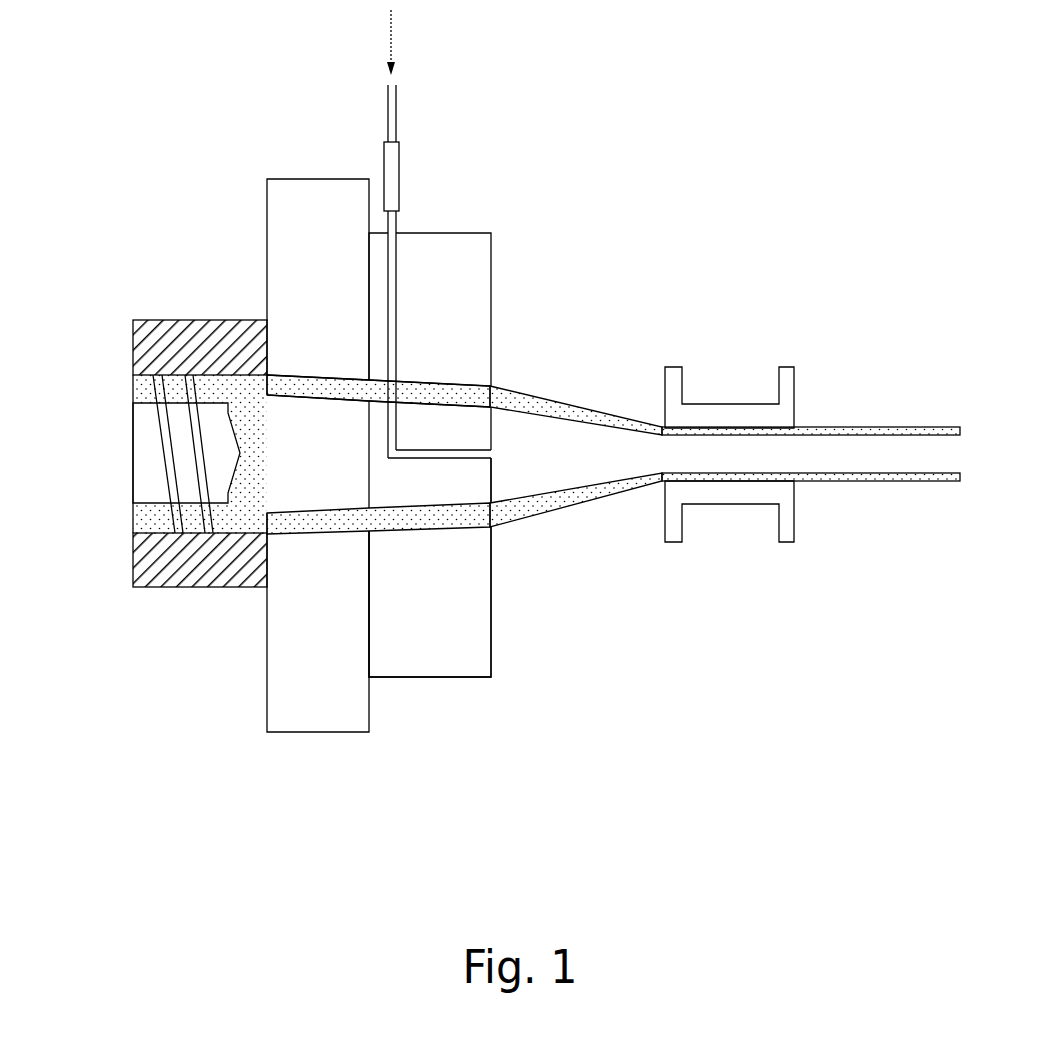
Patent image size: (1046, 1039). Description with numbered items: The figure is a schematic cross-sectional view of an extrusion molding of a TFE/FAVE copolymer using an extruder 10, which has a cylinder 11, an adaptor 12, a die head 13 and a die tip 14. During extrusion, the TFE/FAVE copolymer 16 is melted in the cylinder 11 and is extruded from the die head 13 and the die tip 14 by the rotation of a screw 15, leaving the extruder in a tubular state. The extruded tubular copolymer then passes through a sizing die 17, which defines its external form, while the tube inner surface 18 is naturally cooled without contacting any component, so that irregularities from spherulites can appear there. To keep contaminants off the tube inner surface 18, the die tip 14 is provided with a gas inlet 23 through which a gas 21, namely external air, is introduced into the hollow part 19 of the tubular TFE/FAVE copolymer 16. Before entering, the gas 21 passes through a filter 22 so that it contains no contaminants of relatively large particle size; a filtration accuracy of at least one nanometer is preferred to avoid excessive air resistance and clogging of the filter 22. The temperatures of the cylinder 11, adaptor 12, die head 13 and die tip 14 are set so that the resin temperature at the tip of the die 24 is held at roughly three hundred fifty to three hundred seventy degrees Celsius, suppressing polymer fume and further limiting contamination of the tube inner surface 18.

The extruder 10 is at (201, 222).
The cylinder 11 is at (198, 572).
The adaptor 12 is at (320, 710).
The die head 13 is at (428, 650).
The die tip 14 is at (440, 483).
The screw 15 is at (143, 455).
The TFE/FAVE copolymer 16 is at (150, 520).
The sizing die 17 is at (738, 500).
The tube inner surface 18 is at (918, 475).
The hollow part 19 is at (572, 465).
The gas 21 is at (392, 35).
The filter 22 is at (399, 178).
The gas inlet 23 is at (490, 450).
The tip of the die 24 is at (490, 385).